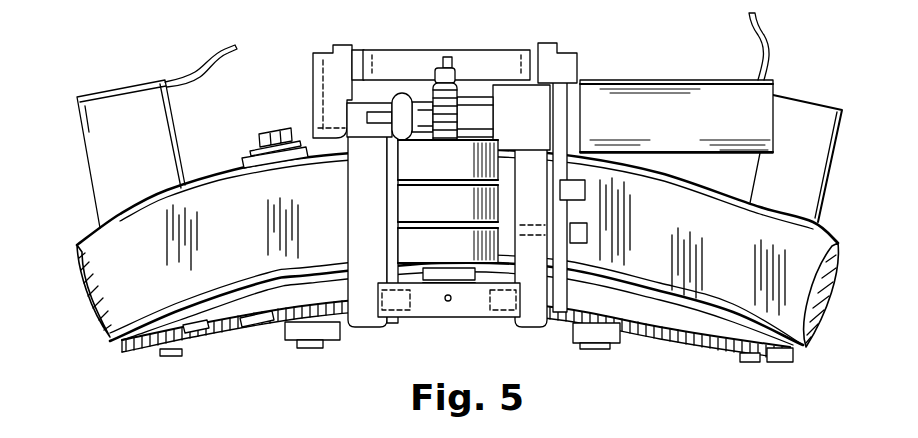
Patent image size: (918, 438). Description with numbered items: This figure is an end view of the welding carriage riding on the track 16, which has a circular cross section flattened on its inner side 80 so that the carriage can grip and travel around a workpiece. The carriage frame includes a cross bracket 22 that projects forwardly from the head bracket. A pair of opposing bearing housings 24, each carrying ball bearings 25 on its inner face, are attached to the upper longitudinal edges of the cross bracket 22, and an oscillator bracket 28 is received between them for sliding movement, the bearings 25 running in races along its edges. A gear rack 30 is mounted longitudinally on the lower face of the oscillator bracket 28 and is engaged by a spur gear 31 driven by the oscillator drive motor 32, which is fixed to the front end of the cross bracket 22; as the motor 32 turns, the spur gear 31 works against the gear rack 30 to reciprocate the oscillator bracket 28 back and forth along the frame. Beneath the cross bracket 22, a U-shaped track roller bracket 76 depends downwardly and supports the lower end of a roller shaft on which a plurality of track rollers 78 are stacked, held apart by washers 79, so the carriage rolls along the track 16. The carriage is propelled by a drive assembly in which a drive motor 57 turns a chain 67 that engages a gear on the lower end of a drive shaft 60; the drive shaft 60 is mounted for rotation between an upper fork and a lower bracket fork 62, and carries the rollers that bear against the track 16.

The track 16 is at (220, 180).
The cross bracket 22 is at (357, 115).
The bearing housings 24 is at (323, 64).
The ball bearings 25 is at (360, 57).
The oscillator bracket 28 is at (415, 62).
The gear rack 30 is at (455, 78).
The spur gear 31 is at (472, 98).
The oscillator drive motor 32 is at (678, 98).
The drive motor 57 is at (152, 128).
The drive shaft 60 is at (307, 337).
The lower bracket fork 62 is at (205, 308).
The chain 67 is at (253, 323).
The track roller bracket 76 is at (482, 305).
The track rollers 78 is at (412, 200).
The washers 79 is at (398, 227).
The flattened inner side 80 is at (237, 253).